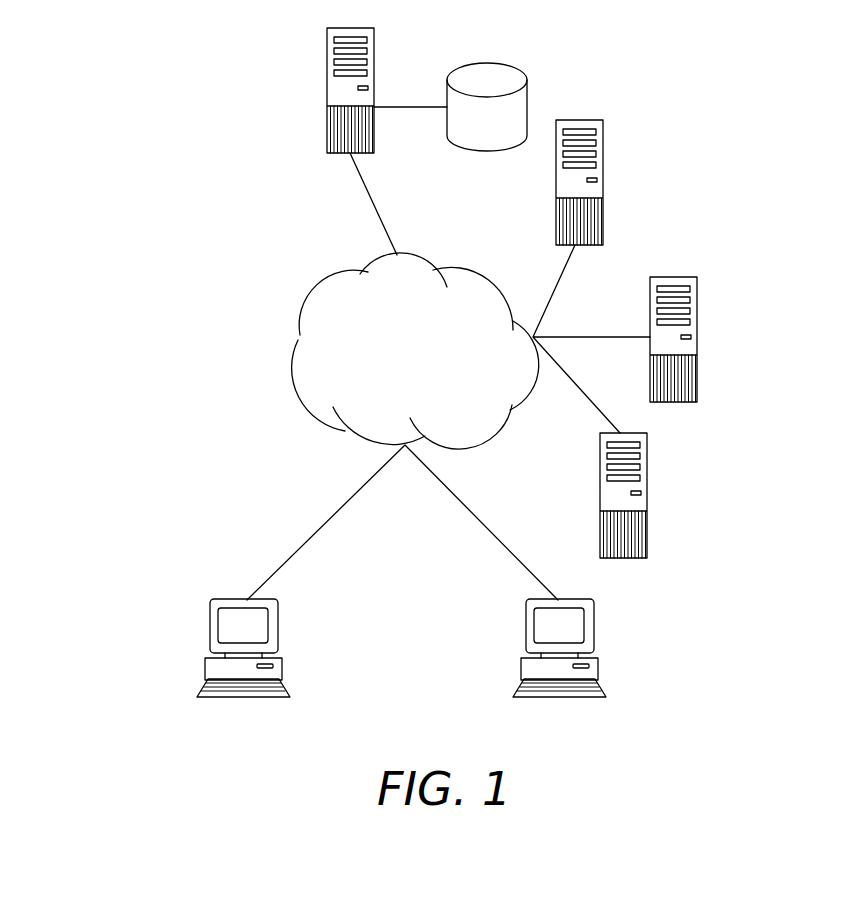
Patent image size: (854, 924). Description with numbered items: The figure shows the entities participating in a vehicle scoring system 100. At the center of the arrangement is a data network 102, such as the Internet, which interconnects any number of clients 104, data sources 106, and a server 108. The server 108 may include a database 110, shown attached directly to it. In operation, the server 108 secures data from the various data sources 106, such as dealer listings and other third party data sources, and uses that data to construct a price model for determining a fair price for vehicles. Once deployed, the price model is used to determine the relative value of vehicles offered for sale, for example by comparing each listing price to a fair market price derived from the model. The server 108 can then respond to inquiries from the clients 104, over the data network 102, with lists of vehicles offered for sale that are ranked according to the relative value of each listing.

The system 100 is at (127, 112).
The data network 102 is at (347, 270).
The clients 104 is at (243, 698).
The data sources 106 is at (590, 120).
The server 108 is at (343, 28).
The database 110 is at (487, 62).